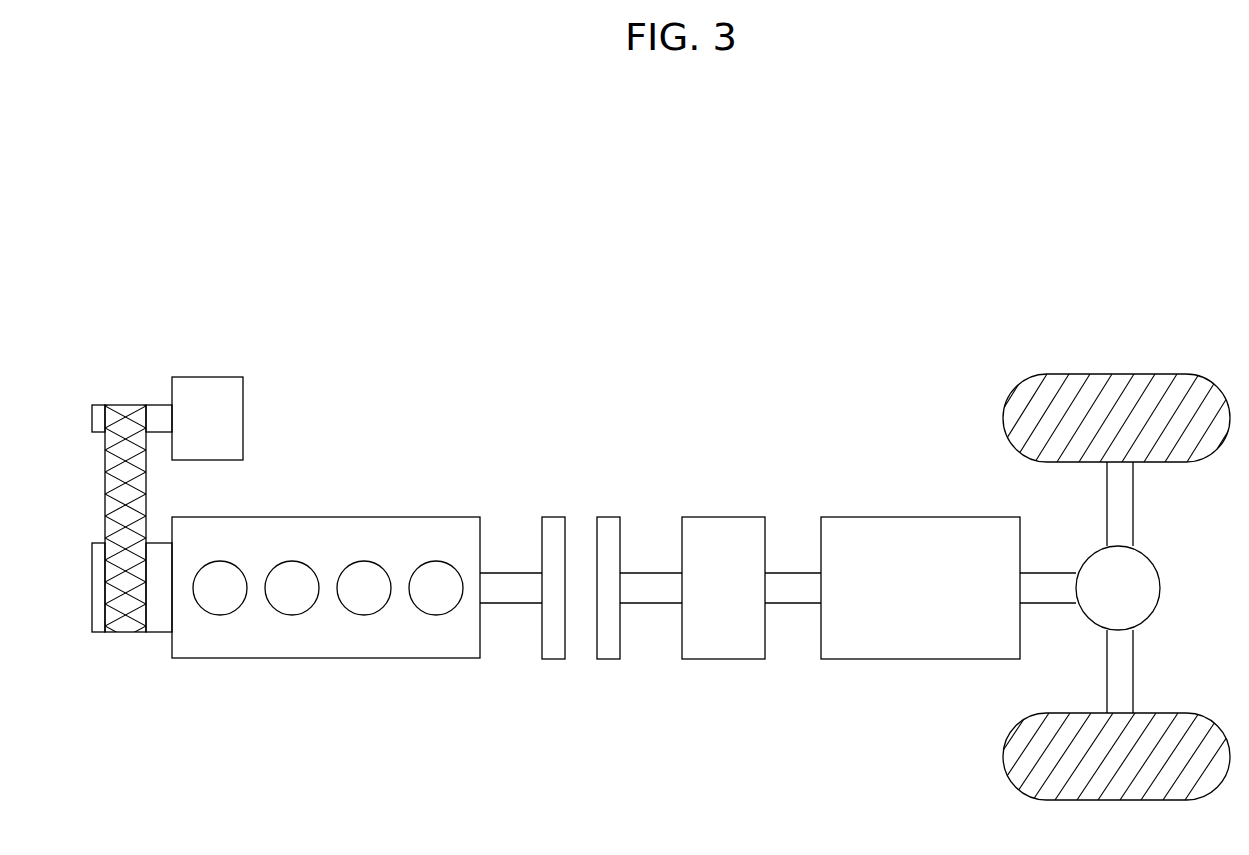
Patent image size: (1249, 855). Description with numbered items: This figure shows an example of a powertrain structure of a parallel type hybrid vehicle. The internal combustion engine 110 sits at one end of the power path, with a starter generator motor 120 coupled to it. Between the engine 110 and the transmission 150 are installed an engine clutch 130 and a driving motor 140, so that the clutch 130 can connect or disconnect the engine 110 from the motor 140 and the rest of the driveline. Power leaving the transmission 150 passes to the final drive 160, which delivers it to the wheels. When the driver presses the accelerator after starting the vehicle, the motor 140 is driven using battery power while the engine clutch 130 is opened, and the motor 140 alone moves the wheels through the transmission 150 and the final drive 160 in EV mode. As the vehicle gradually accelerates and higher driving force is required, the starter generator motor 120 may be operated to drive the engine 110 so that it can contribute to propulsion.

The internal combustion engine 110 is at (430, 517).
The starter generator motor 120 is at (193, 377).
The engine clutch 130 is at (598, 517).
The driving motor 140 is at (713, 517).
The transmission 150 is at (968, 517).
The final drive 160 is at (1153, 563).